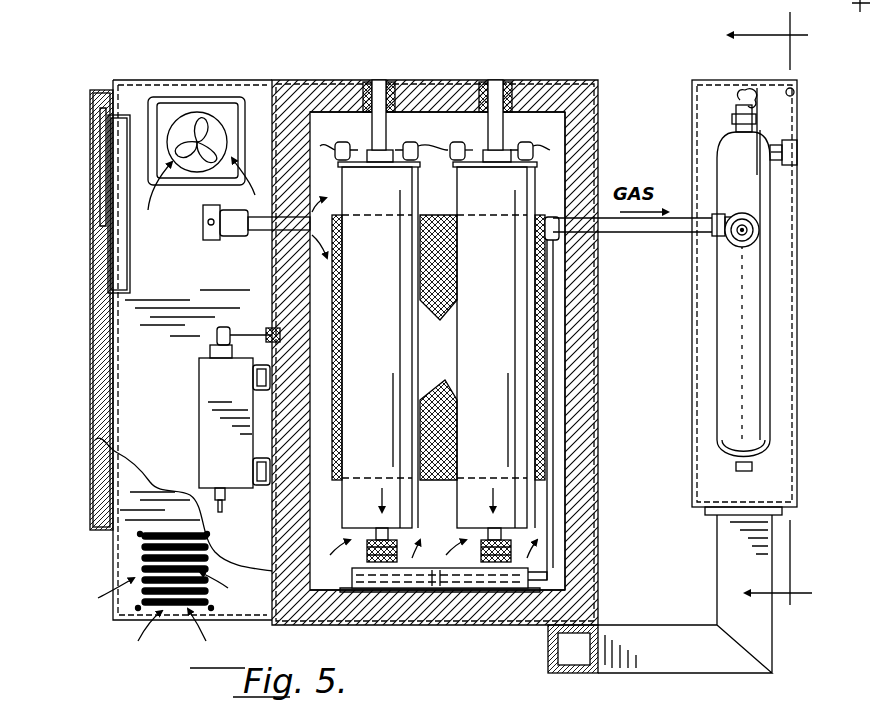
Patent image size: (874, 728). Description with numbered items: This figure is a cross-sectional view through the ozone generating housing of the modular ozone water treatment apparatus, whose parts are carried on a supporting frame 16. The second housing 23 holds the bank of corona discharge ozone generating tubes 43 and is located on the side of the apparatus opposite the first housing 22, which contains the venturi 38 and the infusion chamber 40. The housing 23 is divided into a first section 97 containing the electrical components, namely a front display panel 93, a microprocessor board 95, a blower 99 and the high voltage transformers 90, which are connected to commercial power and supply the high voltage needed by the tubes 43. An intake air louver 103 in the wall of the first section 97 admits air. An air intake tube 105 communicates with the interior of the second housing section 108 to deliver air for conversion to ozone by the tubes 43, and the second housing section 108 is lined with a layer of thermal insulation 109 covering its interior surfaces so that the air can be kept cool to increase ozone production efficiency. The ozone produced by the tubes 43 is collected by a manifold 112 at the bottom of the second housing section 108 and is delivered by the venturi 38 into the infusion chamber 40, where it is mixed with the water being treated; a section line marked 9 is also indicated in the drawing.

The section line 9- 9 is at (780, 314).
The supporting frame 16 is at (730, 547).
The first housing 22 is at (716, 80).
The second housing 23 is at (355, 78).
The venturi 38 is at (730, 243).
The infusion chamber 40 is at (722, 350).
The ozone generating tubes 43 is at (390, 318).
The high voltage transformers 90 is at (212, 394).
The front display panel 93 is at (96, 142).
The microprocessor board 95 is at (122, 218).
The first section 97 is at (140, 80).
The blower 99 is at (215, 112).
The intake air louver 103 is at (160, 566).
The air intake tube 105 is at (200, 235).
The second housing section 108 is at (470, 40).
The thermal insulation 109 is at (546, 98).
The manifold 112 is at (458, 585).